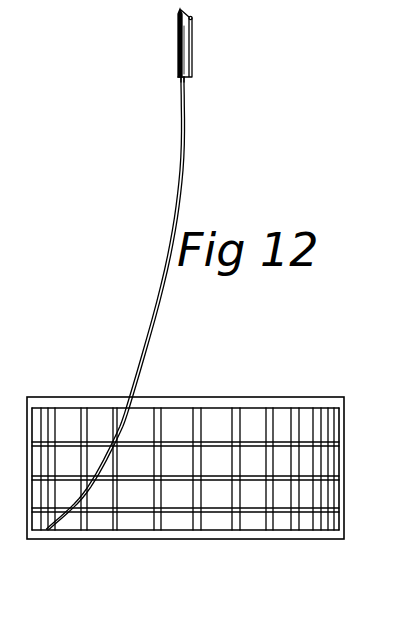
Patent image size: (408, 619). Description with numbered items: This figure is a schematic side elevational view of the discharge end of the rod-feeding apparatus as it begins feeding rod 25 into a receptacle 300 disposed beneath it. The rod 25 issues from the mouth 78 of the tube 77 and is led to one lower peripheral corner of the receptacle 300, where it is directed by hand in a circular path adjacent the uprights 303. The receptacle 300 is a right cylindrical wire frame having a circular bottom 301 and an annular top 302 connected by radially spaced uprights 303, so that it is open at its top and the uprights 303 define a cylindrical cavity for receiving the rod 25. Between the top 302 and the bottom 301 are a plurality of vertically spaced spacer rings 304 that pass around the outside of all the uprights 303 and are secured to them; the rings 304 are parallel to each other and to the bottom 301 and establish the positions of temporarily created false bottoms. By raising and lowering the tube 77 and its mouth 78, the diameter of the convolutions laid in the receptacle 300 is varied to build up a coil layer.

The tube 77 is at (192, 57).
The mouth 78 is at (190, 78).
The rod 25 is at (208, 166).
The receptacle 300 is at (201, 540).
The circular bottom 301 is at (304, 540).
The annular top 302 is at (247, 378).
The uprights 303 is at (372, 421).
The spacer rings 304 is at (167, 479).